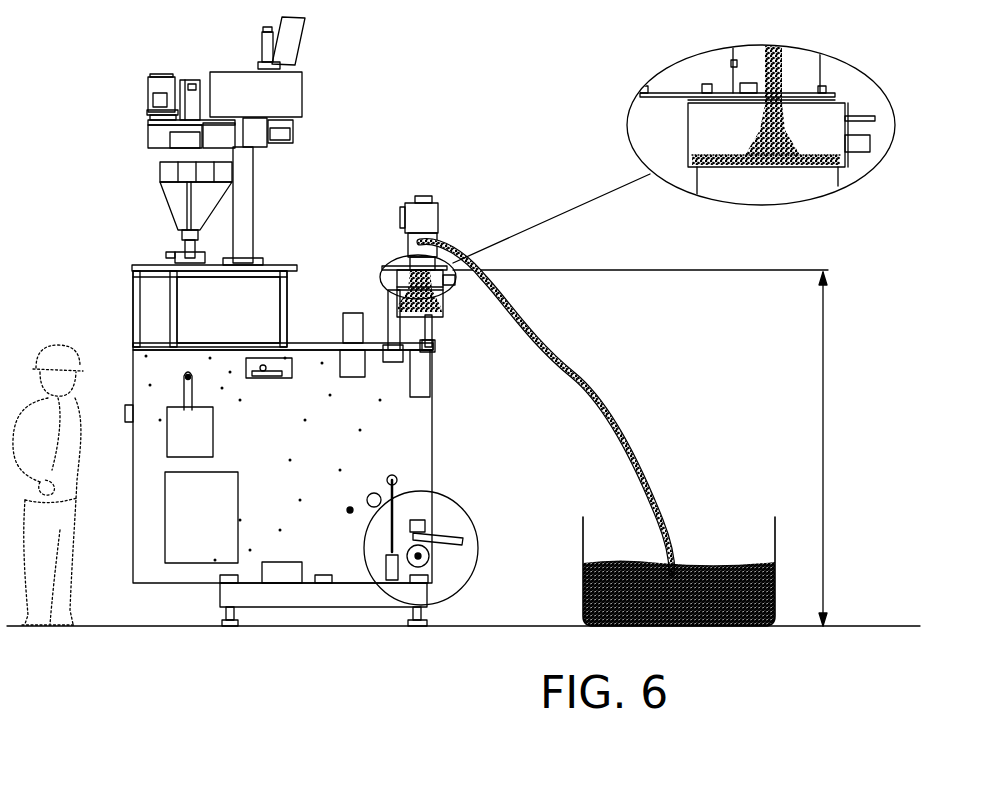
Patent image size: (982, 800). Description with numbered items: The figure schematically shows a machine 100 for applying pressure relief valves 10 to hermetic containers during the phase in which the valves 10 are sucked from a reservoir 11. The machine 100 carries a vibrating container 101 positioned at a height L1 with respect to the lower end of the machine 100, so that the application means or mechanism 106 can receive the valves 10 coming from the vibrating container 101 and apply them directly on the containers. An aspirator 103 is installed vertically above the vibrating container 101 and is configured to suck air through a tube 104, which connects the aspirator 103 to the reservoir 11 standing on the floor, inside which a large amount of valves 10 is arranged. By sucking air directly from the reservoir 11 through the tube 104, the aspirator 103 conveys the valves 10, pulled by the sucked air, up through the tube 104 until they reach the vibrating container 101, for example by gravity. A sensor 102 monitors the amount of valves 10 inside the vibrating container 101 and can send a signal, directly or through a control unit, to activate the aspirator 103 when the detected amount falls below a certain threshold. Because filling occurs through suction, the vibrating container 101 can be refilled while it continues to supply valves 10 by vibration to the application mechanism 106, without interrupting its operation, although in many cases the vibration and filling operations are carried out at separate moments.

The machine 100 is at (108, 268).
The vibrating container 101 is at (407, 293).
The sensor 102 is at (622, 169).
The aspirator 103 is at (427, 218).
The tube 104 is at (573, 375).
The application means or mechanism 106 is at (432, 347).
The pressure relief valves 10 is at (428, 288).
The reservoir 11 is at (577, 577).
The height L1 is at (640, 448).